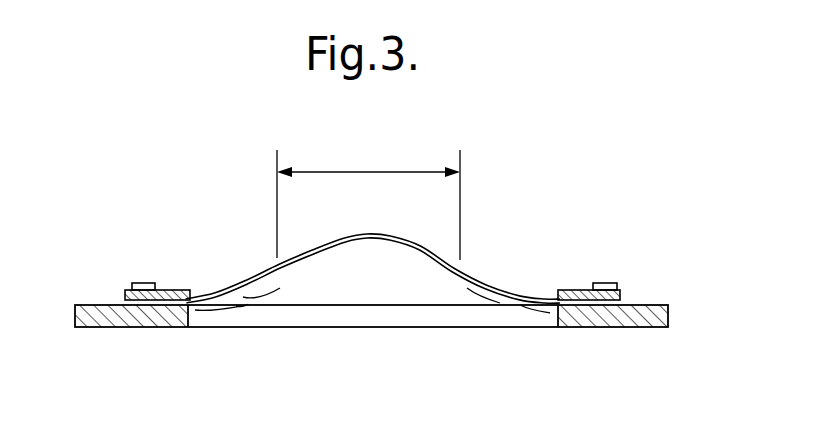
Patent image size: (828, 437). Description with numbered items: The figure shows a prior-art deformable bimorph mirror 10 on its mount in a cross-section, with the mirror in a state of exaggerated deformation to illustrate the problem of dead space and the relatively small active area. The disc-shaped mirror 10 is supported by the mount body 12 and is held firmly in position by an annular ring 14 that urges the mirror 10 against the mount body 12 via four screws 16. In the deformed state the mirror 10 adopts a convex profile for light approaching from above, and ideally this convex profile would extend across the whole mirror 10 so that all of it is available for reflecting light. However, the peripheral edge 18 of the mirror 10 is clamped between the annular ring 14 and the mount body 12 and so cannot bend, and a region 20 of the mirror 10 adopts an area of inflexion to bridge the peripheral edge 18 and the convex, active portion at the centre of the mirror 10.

The deformable bimorph mirror 10 is at (328, 251).
The mount body 12 is at (118, 325).
The annular ring 14 is at (168, 290).
The screws 16 is at (142, 283).
The peripheral edge 18 is at (572, 305).
The region of inflexion 20 is at (365, 172).